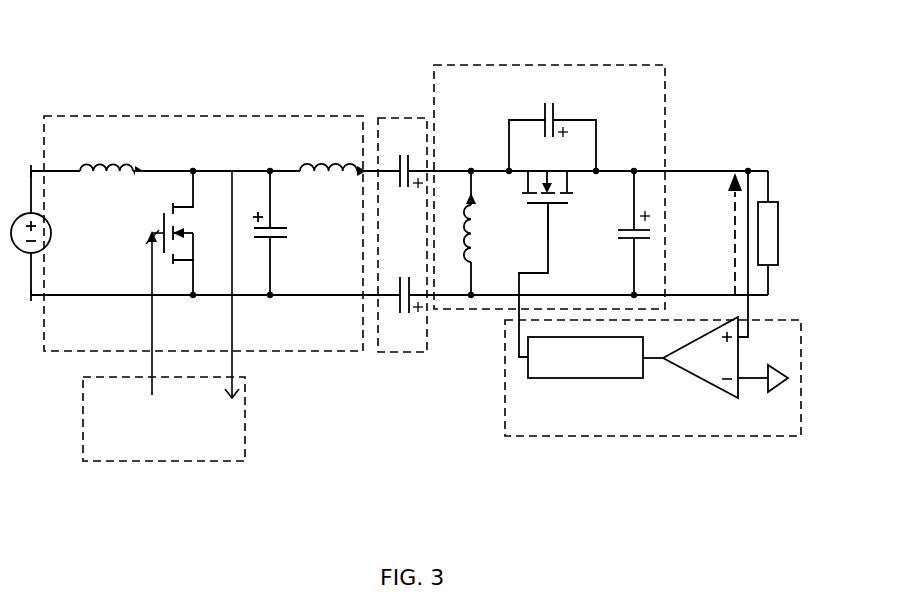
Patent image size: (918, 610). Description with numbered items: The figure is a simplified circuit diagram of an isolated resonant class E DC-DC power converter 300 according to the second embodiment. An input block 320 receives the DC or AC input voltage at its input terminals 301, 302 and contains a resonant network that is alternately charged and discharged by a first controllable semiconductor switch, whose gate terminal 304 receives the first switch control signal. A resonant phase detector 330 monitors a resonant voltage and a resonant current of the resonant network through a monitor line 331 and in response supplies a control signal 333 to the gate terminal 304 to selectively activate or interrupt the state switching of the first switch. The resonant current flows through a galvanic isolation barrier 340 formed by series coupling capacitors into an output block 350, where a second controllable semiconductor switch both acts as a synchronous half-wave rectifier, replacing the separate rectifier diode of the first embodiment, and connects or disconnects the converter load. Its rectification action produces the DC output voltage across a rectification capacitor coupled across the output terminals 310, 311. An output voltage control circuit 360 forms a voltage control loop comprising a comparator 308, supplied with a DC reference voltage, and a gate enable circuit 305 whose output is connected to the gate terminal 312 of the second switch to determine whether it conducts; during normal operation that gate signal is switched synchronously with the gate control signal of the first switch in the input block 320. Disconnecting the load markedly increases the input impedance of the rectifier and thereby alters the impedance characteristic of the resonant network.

The class E power converter 300 is at (410, 262).
The input terminal 301 is at (55, 148).
The input terminal 302 is at (61, 310).
The gate terminal of switch S1 304 is at (128, 262).
The gate enable circuit 305 is at (546, 361).
The comparator 308 is at (715, 361).
The output terminal 310 is at (715, 240).
The output terminal 311 is at (599, 285).
The gate terminal of switch S2 312 is at (518, 223).
The input block 320 is at (205, 216).
The resonant phase detector 330 is at (177, 337).
The monitor line 331 is at (262, 284).
The control signal 333 is at (185, 345).
The galvanic isolation barrier 340 is at (382, 211).
The output block 350 is at (546, 192).
The output voltage control circuit 360 is at (625, 393).